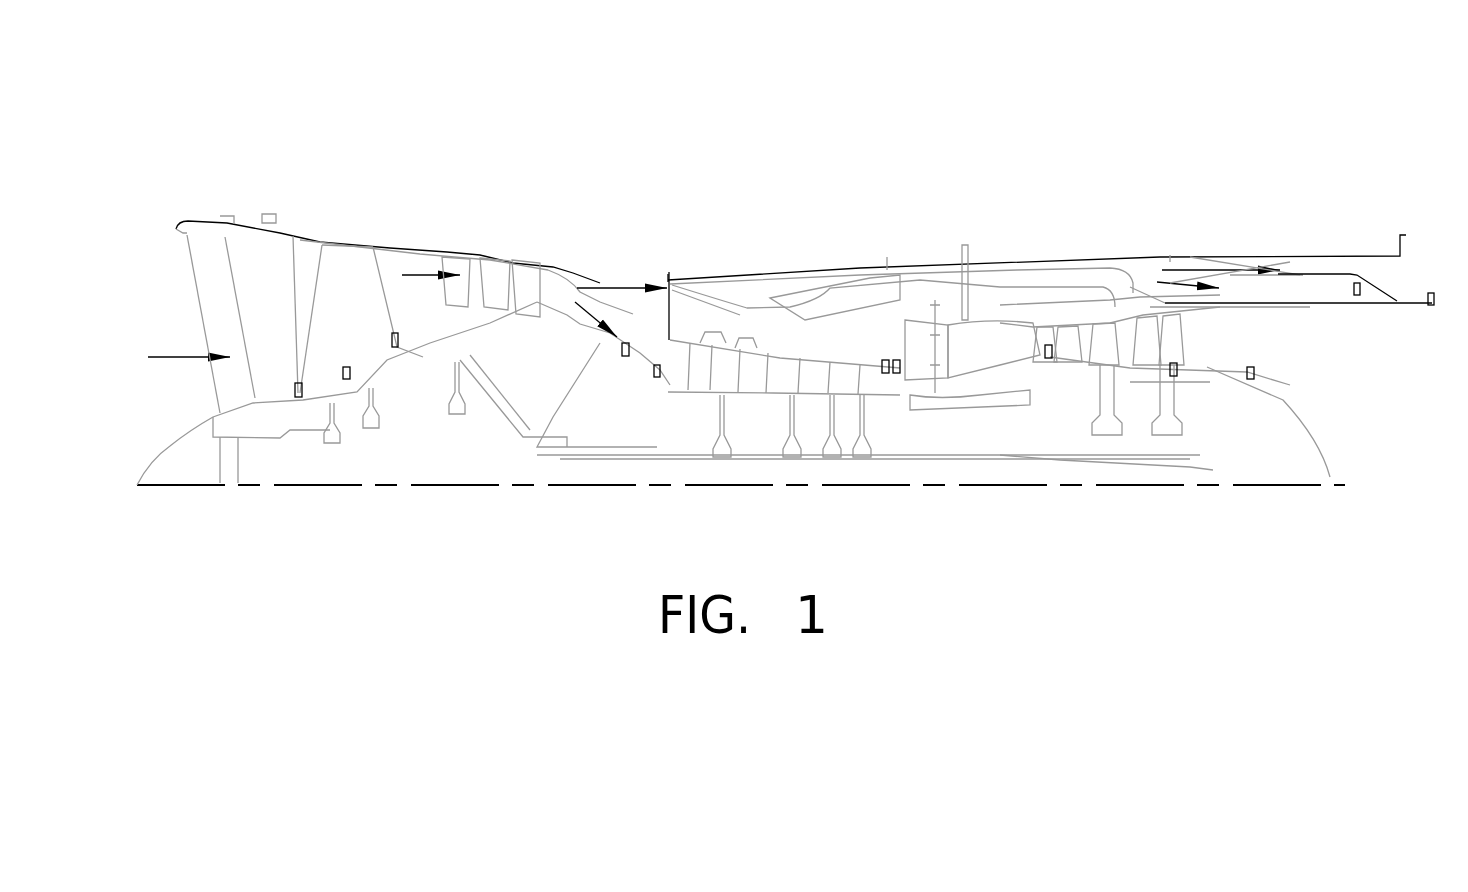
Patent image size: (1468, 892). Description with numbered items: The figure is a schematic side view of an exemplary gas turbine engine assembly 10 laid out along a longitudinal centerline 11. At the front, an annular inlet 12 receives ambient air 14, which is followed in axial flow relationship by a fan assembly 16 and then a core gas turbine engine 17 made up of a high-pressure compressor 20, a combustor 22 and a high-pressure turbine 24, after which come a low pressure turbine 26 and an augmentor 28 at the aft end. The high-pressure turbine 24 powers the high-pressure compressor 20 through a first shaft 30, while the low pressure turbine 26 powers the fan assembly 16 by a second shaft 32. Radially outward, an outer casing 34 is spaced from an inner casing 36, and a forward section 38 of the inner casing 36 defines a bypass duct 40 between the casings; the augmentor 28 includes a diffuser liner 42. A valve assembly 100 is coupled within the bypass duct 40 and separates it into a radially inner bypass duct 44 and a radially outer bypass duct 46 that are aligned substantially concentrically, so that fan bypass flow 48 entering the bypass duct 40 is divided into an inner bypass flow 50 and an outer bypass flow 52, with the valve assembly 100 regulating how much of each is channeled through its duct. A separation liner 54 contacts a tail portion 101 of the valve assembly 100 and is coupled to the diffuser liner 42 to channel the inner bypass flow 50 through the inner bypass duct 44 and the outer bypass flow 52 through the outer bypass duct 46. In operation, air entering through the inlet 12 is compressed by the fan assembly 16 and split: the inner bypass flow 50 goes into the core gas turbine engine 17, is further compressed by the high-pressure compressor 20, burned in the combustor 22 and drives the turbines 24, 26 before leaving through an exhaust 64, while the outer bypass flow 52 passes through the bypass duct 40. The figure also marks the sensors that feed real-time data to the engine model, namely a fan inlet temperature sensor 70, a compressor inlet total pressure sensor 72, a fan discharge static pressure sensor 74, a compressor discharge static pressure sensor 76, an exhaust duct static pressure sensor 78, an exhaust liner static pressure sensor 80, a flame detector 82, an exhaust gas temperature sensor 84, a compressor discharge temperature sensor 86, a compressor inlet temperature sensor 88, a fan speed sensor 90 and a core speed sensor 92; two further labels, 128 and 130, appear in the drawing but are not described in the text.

The gas turbine engine assembly 10 is at (290, 118).
The longitudinal centerline 11 is at (447, 483).
The annular inlet 12 is at (170, 258).
The ambient air 14 is at (188, 355).
The fan assembly 16 is at (362, 324).
The core gas turbine engine 17 is at (993, 222).
The high-pressure compressor 20 is at (772, 347).
The combustor 22 is at (1005, 361).
The high-pressure turbine 24 is at (1075, 340).
The low pressure turbine 26 is at (1100, 333).
The augmentor 28 is at (1213, 357).
The first shaft 30 is at (993, 430).
The second shaft 32 is at (910, 442).
The outer casing 34 is at (915, 263).
The inner casing 36 is at (633, 297).
The forward section 38 is at (608, 300).
The bypass duct 40 is at (688, 297).
The diffuser liner 42 is at (1367, 305).
The radially inner bypass duct 44 is at (1322, 285).
The radially outer bypass duct 46 is at (1300, 265).
The fan bypass flow 48 is at (420, 275).
The inner bypass flow 50 is at (583, 313).
The outer bypass flow 52 is at (623, 297).
The separation liner 54 is at (1350, 270).
The exhaust 64 is at (1437, 287).
The fan inlet temperature sensor 70 is at (298, 397).
The compressor inlet total pressure sensor 72 is at (625, 356).
The fan discharge static pressure sensor 74 is at (395, 347).
The compressor discharge static pressure sensor 76 is at (884, 373).
The exhaust duct static pressure sensor 78 is at (1254, 372).
The exhaust liner static pressure sensor 80 is at (1354, 289).
The flame detector 82 is at (1432, 305).
The exhaust gas temperature sensor 84 is at (1173, 376).
The compressor discharge temperature sensor 86 is at (897, 373).
The compressor inlet temperature sensor 88 is at (657, 377).
The fan speed sensor 90 is at (347, 379).
The core speed sensor 92 is at (1048, 358).
The valve assembly 100 is at (1188, 272).
The tail portion 101 is at (1293, 277).
The core exhaust flow 128 is at (1198, 292).
The fan nozzle 130 is at (1223, 260).